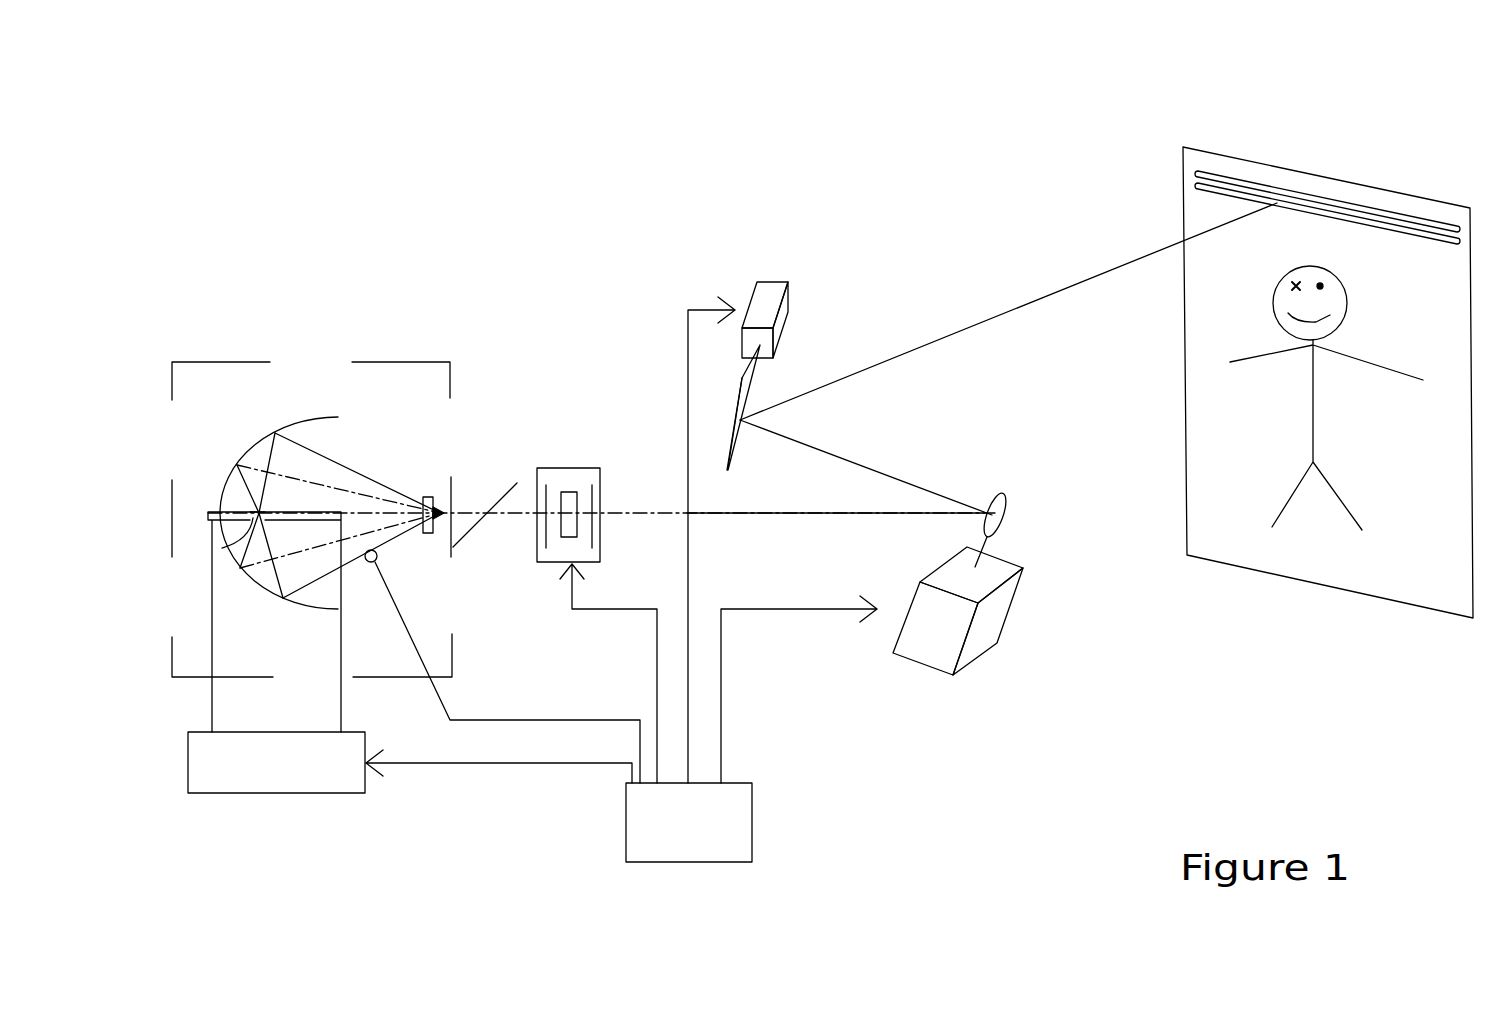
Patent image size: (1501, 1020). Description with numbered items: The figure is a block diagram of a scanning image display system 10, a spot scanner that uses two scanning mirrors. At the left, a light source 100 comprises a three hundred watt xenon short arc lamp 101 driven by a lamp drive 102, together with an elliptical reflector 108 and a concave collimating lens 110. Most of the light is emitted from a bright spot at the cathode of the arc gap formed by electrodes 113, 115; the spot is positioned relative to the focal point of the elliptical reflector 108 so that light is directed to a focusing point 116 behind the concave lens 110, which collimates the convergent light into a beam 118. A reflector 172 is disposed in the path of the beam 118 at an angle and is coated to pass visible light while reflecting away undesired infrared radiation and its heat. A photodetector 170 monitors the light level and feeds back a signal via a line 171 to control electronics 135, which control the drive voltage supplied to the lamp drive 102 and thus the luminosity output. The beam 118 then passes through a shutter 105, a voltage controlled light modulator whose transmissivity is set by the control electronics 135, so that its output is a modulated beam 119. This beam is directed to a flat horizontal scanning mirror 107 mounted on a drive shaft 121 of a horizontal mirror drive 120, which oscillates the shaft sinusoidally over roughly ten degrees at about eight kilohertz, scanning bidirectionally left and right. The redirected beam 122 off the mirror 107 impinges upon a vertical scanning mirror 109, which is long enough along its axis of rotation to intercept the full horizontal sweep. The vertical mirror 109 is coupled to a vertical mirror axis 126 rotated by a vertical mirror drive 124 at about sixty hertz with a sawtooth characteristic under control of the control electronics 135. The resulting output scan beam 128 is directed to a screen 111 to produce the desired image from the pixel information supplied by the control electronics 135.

The scanning image display system 10 is at (733, 207).
The light source 100 is at (312, 498).
The arc lamp 101 is at (241, 506).
The lamp drive 102 is at (333, 795).
The shutter 105 is at (604, 470).
The horizontal scanning mirror 107 is at (1006, 489).
The elliptical reflector 108 is at (338, 417).
The vertical scanning mirror 109 is at (725, 430).
The concave collimating lens 110 is at (426, 495).
The screen 111 is at (1290, 170).
The electrode 113 is at (257, 487).
The electrode 115 is at (243, 548).
The focusing point 116 is at (443, 510).
The beam 118 is at (467, 515).
The modulated beam 119 is at (750, 513).
The horizontal mirror drive 120 is at (1007, 618).
The drive shaft 121 is at (990, 542).
The redirected beam 122 is at (805, 446).
The vertical mirror drive 124 is at (788, 323).
The vertical mirror axis 126 is at (750, 376).
The output scan beam 128 is at (987, 312).
The control electronics 135 is at (752, 820).
The photodetector 170 is at (380, 556).
The line 171 is at (576, 720).
The reflector 172 is at (477, 533).